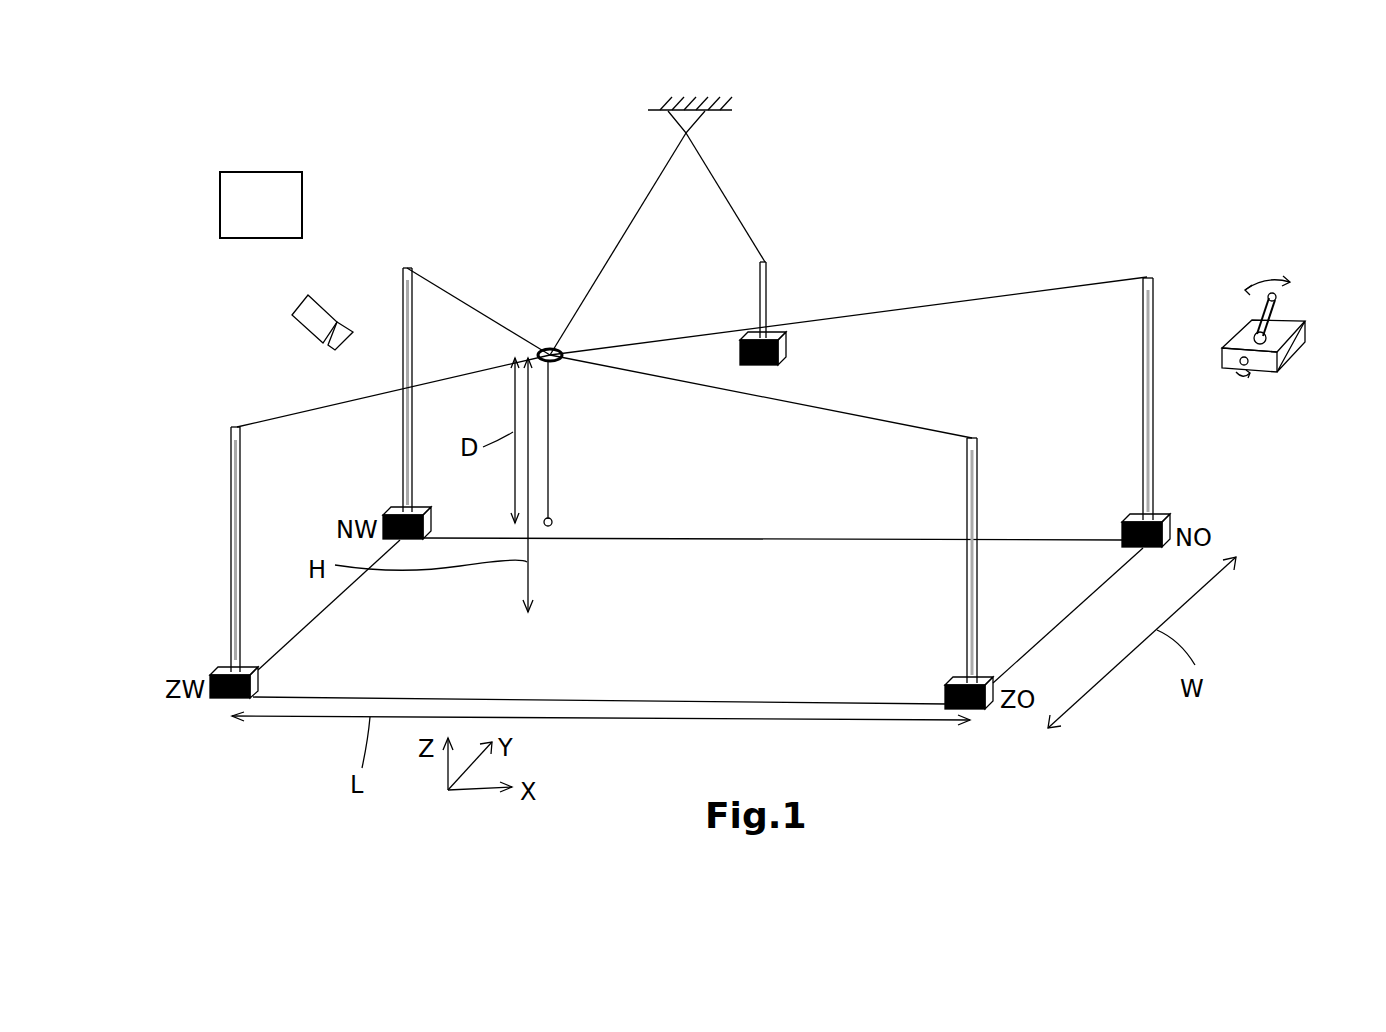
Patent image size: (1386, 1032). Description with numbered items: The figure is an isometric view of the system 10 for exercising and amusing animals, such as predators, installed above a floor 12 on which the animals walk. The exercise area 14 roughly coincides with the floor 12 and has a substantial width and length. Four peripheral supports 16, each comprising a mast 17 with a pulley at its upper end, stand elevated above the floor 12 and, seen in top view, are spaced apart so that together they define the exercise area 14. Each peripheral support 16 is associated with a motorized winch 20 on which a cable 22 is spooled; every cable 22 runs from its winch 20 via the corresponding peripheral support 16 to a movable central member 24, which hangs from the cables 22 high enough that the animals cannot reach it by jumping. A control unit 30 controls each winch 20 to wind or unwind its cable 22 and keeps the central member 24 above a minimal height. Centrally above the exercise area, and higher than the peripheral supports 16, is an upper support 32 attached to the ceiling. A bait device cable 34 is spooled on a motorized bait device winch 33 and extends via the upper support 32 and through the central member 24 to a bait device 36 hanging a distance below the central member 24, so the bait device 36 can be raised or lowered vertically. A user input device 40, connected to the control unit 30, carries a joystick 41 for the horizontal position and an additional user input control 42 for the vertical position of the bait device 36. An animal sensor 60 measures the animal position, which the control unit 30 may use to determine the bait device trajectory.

The system 10 is at (918, 247).
The floor 12 is at (735, 629).
The exercise area 14 is at (607, 621).
The peripheral support 16 is at (232, 425).
The mast 17 is at (230, 465).
The motorized winch 20 is at (218, 700).
The cable 22 is at (295, 412).
The movable central member 24 is at (548, 347).
The control unit 30 is at (275, 220).
The upper support 32 is at (684, 133).
The bait device winch 33 is at (782, 334).
The bait device cable 34 is at (745, 225).
The bait device 36 is at (552, 520).
The user input device 40 is at (1306, 306).
The joystick 41 is at (1257, 320).
The additional user input control 42 is at (553, 347).
The animal sensor 60 is at (306, 312).